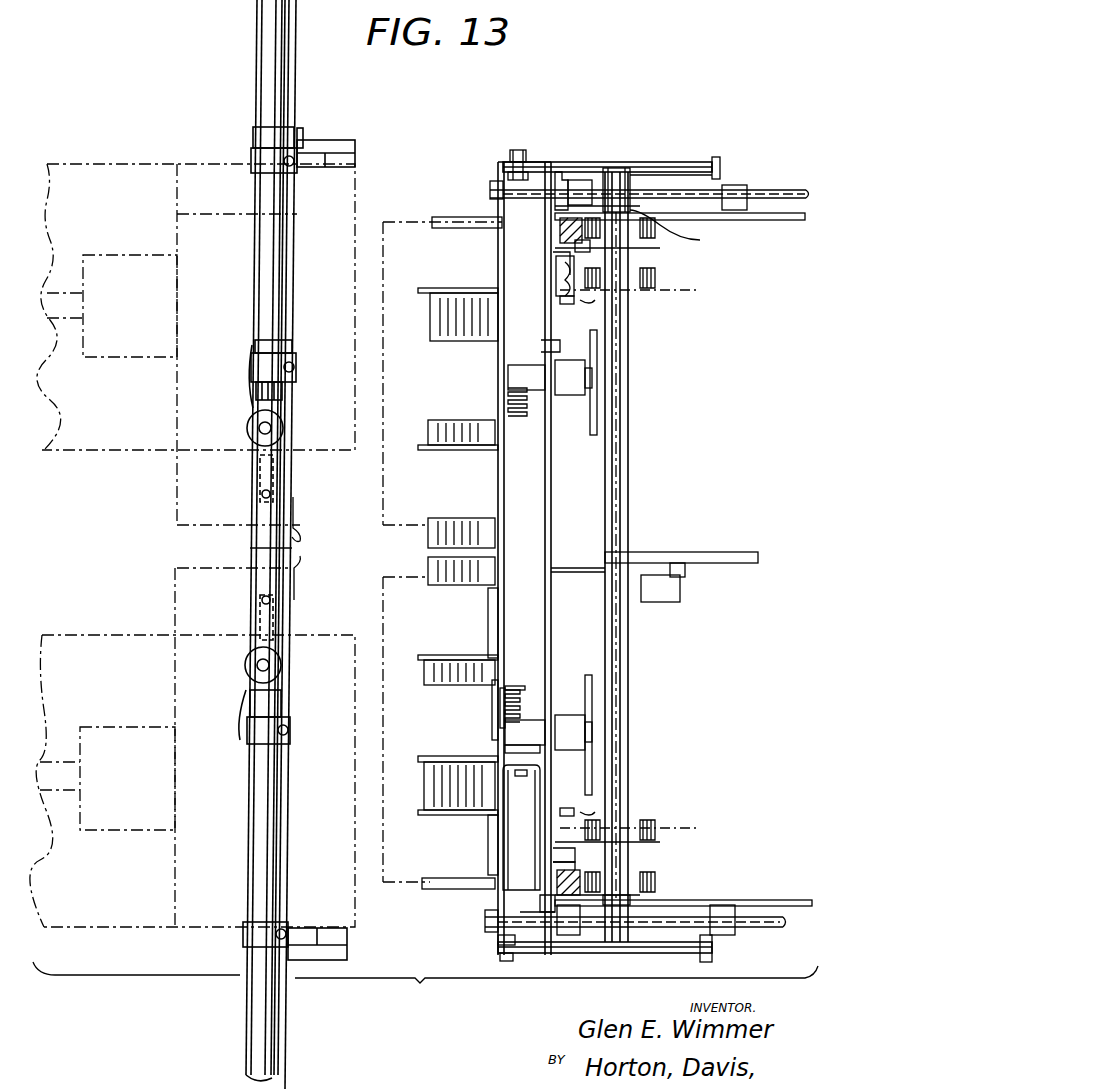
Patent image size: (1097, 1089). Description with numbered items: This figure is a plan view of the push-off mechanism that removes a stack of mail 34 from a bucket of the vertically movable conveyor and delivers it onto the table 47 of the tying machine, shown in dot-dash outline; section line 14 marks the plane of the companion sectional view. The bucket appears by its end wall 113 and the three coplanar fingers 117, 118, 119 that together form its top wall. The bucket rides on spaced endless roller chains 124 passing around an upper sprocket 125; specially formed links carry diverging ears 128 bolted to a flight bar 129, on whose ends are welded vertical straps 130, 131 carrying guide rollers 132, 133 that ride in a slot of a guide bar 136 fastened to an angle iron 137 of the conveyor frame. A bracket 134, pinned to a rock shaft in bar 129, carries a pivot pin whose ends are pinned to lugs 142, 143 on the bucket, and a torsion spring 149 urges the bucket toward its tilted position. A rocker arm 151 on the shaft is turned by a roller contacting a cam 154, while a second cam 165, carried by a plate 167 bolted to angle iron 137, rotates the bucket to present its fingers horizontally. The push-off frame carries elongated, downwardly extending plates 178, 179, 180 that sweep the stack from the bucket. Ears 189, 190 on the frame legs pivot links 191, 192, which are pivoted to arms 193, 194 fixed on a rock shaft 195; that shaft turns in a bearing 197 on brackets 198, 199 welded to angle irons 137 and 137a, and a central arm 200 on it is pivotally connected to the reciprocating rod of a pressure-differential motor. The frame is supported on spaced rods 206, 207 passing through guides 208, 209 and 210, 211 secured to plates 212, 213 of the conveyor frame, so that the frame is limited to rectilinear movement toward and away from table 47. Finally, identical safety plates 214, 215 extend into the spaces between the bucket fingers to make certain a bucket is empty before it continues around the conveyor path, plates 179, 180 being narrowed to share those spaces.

The section line 14- 14 is at (536, 210).
The stack of mail 34 is at (400, 222).
The table 47 is at (318, 452).
The end wall 113 is at (452, 217).
The finger 117 is at (430, 568).
The finger 118 is at (440, 680).
The finger 119 is at (436, 786).
The roller chain 124 is at (560, 285).
The upper sprocket 125 is at (702, 291).
The diverging ear 128 is at (592, 310).
The bar 129 is at (553, 522).
The strap 130 is at (590, 856).
The strap 131 is at (568, 267).
The guide roller 132 is at (590, 866).
The guide roller 133 is at (575, 247).
The bracket 134 is at (522, 381).
The guide bar 136 is at (560, 230).
The angle iron 137 is at (540, 908).
The angle iron 137a is at (565, 180).
The lug 142 is at (510, 749).
The lug 143 is at (503, 694).
The torsion spring 149 is at (520, 700).
The rocker arm 151 is at (598, 403).
The cam 154 is at (575, 302).
The cam 165 is at (562, 348).
The plate 167 is at (538, 815).
The plate 178 is at (490, 838).
The plate 179 is at (493, 712).
The plate 180 is at (490, 603).
The ear 189 is at (498, 942).
The ear 190 is at (512, 150).
The link 191 is at (560, 953).
The link 192 is at (548, 165).
The arm 193 is at (660, 940).
The arm 194 is at (648, 170).
The rock shaft 195 is at (628, 448).
The bearing 197 is at (622, 178).
The bracket 198 is at (650, 905).
The bracket 199 is at (678, 231).
The arm 200 is at (728, 550).
The rod 206 is at (770, 928).
The rod 207 is at (760, 190).
The guide 208 is at (577, 936).
The guide 209 is at (724, 936).
The guide 210 is at (582, 188).
The guide 211 is at (736, 186).
The plate 212 is at (790, 900).
The plate 213 is at (775, 221).
The safety plate 214 is at (426, 757).
The safety plate 215 is at (424, 655).